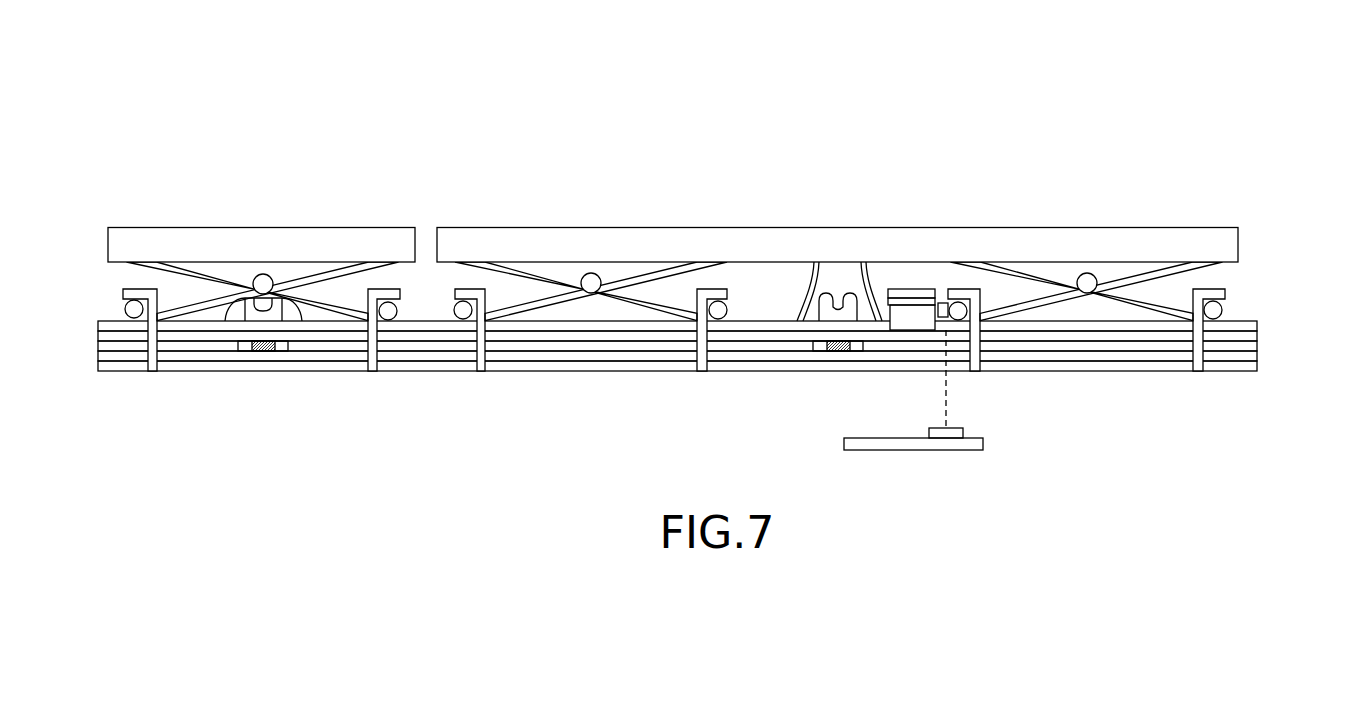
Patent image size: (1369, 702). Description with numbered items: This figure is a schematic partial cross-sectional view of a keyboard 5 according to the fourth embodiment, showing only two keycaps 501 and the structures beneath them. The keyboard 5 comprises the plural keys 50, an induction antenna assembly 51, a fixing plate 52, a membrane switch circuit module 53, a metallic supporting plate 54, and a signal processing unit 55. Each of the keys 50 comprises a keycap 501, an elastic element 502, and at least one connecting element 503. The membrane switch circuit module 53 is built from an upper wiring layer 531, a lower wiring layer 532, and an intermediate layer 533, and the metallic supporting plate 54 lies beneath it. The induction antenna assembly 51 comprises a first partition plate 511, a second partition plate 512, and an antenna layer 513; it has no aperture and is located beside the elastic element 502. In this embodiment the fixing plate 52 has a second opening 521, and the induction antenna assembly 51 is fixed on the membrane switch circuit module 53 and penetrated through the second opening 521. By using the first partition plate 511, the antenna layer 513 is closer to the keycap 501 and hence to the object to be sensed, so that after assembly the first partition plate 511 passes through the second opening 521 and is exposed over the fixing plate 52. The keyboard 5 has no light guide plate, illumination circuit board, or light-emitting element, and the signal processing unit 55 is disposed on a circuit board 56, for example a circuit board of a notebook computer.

The keyboard 5 is at (718, 284).
The keys 50 is at (668, 242).
The keycap 501 is at (317, 240).
The elastic element 502 is at (220, 320).
The connecting element 503 is at (210, 270).
The induction antenna assembly 51 is at (595, 238).
The first partition plate 511 is at (907, 321).
The second partition plate 512 is at (910, 292).
The antenna layer 513 is at (900, 300).
The fixing plate 52 is at (720, 281).
The second opening 521 is at (943, 325).
The membrane switch circuit module 53 is at (718, 239).
The upper wiring layer 531 is at (1243, 328).
The lower wiring layer 532 is at (1240, 355).
The intermediate layer 533 is at (1245, 345).
The metallic supporting plate 54 is at (1202, 363).
The signal processing unit 55 is at (952, 428).
The circuit board 56 is at (950, 443).